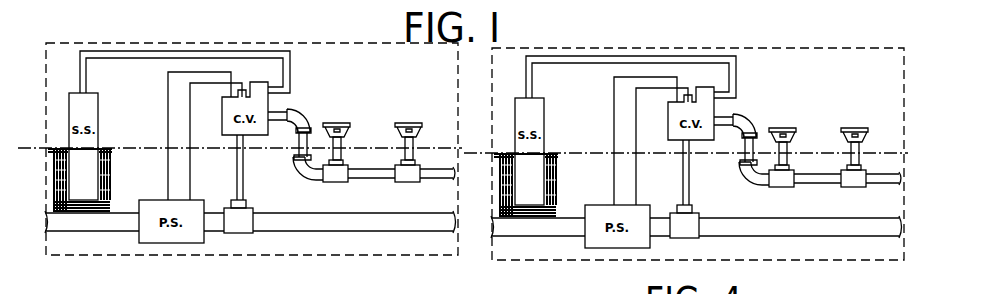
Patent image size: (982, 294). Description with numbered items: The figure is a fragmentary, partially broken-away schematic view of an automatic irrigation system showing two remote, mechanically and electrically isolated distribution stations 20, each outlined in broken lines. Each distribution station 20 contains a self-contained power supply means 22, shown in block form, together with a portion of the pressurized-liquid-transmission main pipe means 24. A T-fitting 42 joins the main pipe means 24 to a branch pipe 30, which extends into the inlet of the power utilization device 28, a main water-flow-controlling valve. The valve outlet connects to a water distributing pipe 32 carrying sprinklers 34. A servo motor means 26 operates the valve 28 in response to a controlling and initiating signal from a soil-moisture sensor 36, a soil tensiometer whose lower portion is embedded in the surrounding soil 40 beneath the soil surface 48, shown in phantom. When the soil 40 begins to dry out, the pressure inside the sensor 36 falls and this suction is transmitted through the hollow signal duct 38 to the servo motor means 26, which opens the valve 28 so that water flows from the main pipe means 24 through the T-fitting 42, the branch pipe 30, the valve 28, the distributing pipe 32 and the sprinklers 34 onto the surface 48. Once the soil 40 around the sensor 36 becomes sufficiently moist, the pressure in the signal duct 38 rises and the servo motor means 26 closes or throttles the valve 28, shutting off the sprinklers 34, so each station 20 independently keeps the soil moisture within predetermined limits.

The distribution station 20 is at (204, 44).
The power supply means 22 is at (141, 244).
The pressurized-liquid-transmission main pipe means 24 is at (352, 231).
The servo motor means 26 is at (276, 104).
The power utilization device 28 is at (196, 144).
The branch pipe 30 is at (245, 184).
The water distributing pipe 32 is at (367, 179).
The sprinklers 34 is at (341, 123).
The soil-moisture sensor 36 is at (112, 174).
The signal duct 38 is at (128, 50).
The soil 40 is at (56, 178).
The T-fitting 42 is at (240, 233).
The surface of the soil 48 is at (110, 148).